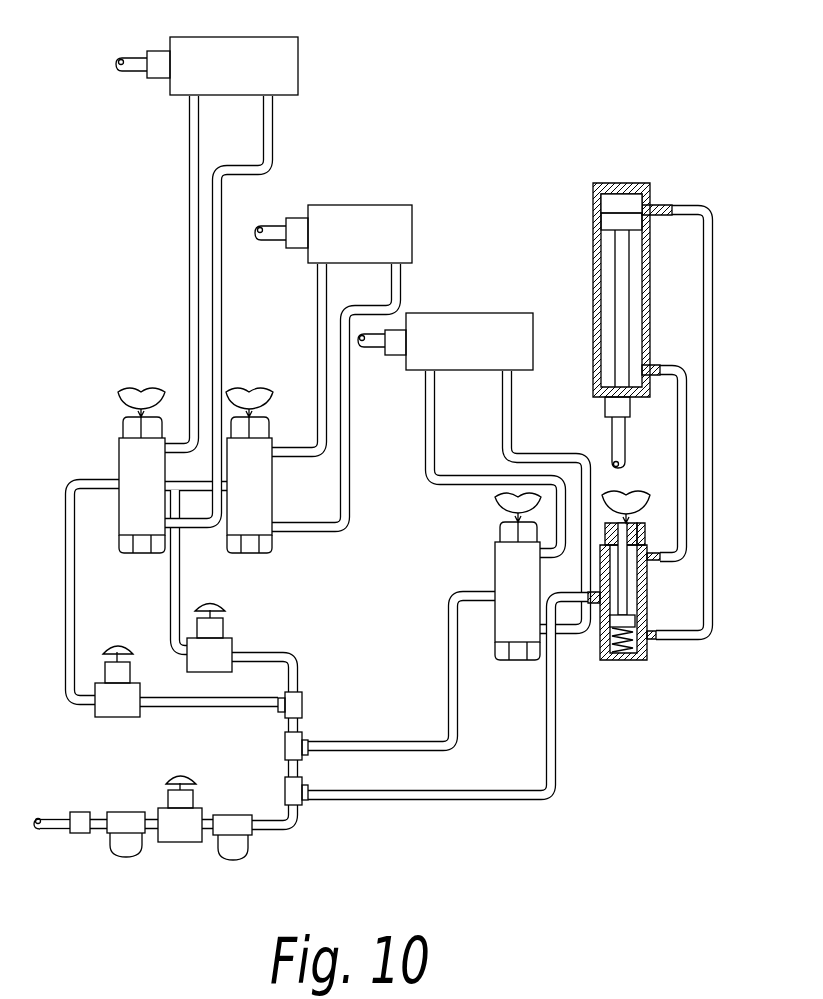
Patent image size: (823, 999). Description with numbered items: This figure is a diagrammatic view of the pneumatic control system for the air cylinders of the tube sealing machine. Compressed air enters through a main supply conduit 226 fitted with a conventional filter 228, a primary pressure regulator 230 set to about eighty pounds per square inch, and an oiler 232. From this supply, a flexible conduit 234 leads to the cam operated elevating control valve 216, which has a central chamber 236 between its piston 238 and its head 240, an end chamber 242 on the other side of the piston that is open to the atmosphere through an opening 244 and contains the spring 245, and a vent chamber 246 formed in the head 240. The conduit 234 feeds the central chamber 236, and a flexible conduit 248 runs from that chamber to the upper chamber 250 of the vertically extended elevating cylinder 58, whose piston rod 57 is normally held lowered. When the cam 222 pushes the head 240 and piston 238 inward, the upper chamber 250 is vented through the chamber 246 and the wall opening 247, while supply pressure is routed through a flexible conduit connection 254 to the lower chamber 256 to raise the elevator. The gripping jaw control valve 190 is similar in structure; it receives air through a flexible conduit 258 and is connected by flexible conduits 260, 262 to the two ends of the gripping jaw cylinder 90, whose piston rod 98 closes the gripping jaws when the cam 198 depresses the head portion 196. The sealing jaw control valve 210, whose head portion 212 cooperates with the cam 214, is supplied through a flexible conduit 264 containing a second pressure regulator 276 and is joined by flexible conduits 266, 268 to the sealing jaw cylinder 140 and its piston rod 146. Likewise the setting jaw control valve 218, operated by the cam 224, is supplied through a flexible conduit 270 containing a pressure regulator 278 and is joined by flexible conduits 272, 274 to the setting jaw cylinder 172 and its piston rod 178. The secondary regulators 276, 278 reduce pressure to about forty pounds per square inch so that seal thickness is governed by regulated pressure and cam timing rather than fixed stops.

The air cylinder 172 is at (222, 40).
The piston rod 178 is at (147, 70).
The flexible conduit 274 is at (228, 210).
The flexible conduit 272 is at (189, 284).
The air cylinder 140 is at (363, 206).
The piston rod 146 is at (280, 244).
The flexible conduit 266 is at (317, 332).
The flexible conduit 268 is at (350, 440).
The air cylinder 90 is at (460, 314).
The piston rod 98 is at (363, 349).
The flexible conduit 260 is at (507, 435).
The flexible conduit 262 is at (425, 463).
The air cylinder 58 is at (631, 297).
The upper chamber 250 is at (640, 207).
The lower chamber 256 is at (603, 373).
The piston rod 57 is at (612, 430).
The flexible conduit connection 254 is at (686, 418).
The flexible conduit 248 is at (712, 462).
The cam 224 is at (150, 388).
The cam 214 is at (272, 392).
The head portion 212 is at (258, 418).
The setting jaw control valve 218 is at (119, 452).
The sealing jaw control valve 210 is at (266, 481).
The cam 222 is at (636, 497).
The cam 198 is at (495, 500).
The head portion 196 is at (515, 515).
The gripping jaw control valve 190 is at (494, 566).
The head 240 is at (645, 527).
The vent chamber 246 is at (646, 540).
The wall opening 247 is at (661, 556).
The central chamber 236 is at (628, 598).
The elevating control valve 216 is at (663, 590).
The piston 238 is at (636, 622).
The spring 245 is at (657, 640).
The end chamber 242 is at (600, 640).
The opening 244 is at (628, 661).
The flexible conduit 270 is at (76, 614).
The flexible conduit 264 is at (179, 590).
The pressure regulator 276 is at (210, 673).
The pressure regulator 278 is at (112, 718).
The flexible conduit 258 is at (388, 752).
The flexible conduit 234 is at (450, 801).
The main supply conduit 226 is at (296, 826).
The filter 228 is at (133, 857).
The pressure regulator 230 is at (178, 843).
The oiler 232 is at (240, 860).